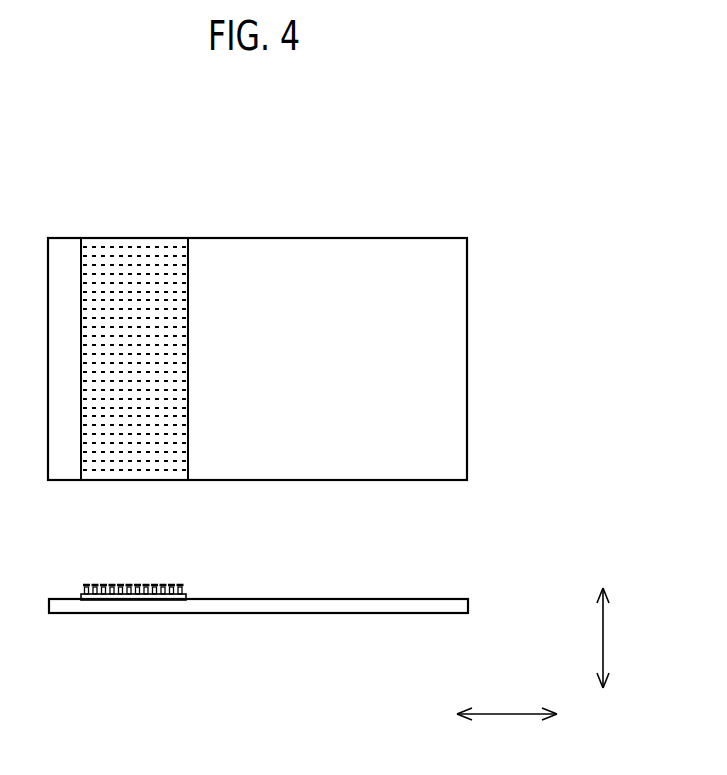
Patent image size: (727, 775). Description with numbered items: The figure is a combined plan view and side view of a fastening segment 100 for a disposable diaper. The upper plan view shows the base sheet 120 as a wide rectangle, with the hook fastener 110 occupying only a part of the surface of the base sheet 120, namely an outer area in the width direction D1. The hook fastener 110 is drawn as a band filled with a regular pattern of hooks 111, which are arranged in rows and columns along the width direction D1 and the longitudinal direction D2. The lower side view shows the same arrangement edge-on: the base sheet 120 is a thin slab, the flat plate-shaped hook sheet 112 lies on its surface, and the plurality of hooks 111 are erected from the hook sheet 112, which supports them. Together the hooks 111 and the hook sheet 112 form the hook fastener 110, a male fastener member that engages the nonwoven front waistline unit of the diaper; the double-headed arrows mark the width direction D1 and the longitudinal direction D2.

The fastening segment 100 is at (500, 184).
The hook fastener 110 is at (147, 240).
The hooks 111 is at (92, 247).
The hook sheet 112 is at (147, 597).
The base sheet 120 is at (322, 256).
The width direction D1 is at (507, 713).
The longitudinal direction D2 is at (604, 638).